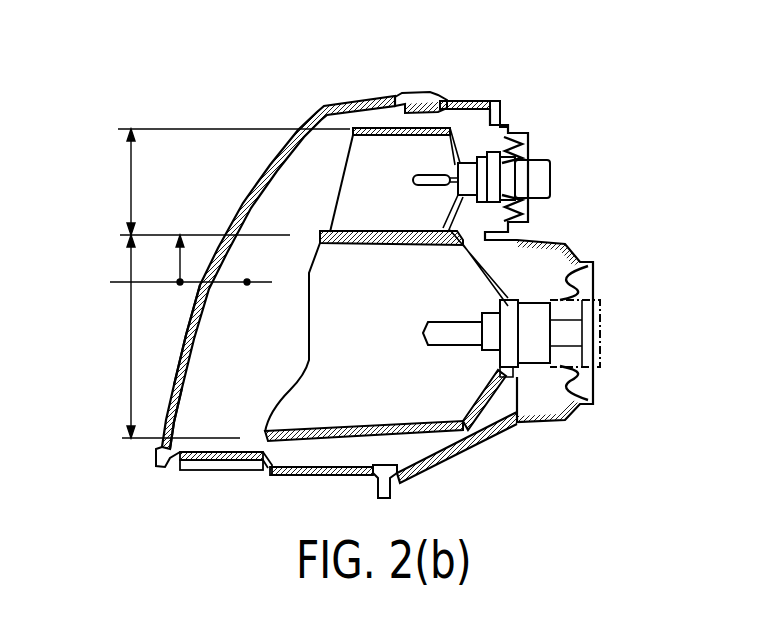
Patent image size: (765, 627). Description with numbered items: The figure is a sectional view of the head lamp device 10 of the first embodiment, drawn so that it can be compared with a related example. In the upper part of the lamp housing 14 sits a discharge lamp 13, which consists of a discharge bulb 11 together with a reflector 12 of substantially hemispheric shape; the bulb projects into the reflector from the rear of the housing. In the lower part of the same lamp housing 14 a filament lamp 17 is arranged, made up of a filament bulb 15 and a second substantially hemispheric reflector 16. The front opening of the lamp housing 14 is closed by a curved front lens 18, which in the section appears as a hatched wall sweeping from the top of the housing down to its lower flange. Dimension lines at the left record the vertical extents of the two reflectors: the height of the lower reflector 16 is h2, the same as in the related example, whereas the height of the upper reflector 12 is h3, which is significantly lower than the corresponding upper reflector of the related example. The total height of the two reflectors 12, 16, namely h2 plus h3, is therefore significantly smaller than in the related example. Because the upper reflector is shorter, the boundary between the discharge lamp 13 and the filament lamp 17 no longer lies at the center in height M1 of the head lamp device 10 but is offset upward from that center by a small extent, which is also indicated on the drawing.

The head lamp device 10 is at (317, 90).
The discharge bulb 11 is at (445, 172).
The reflector 12 is at (413, 140).
The discharge lamp 13 is at (327, 182).
The lamp housing 14 is at (503, 436).
The filament bulb 15 is at (448, 342).
The reflector 16 is at (357, 423).
The filament lamp 17 is at (237, 382).
The front lens 18 is at (187, 317).
The center in height M1 is at (247, 285).
The height of the lower reflector h2 is at (112, 343).
The height of the upper reflector h3 is at (107, 182).